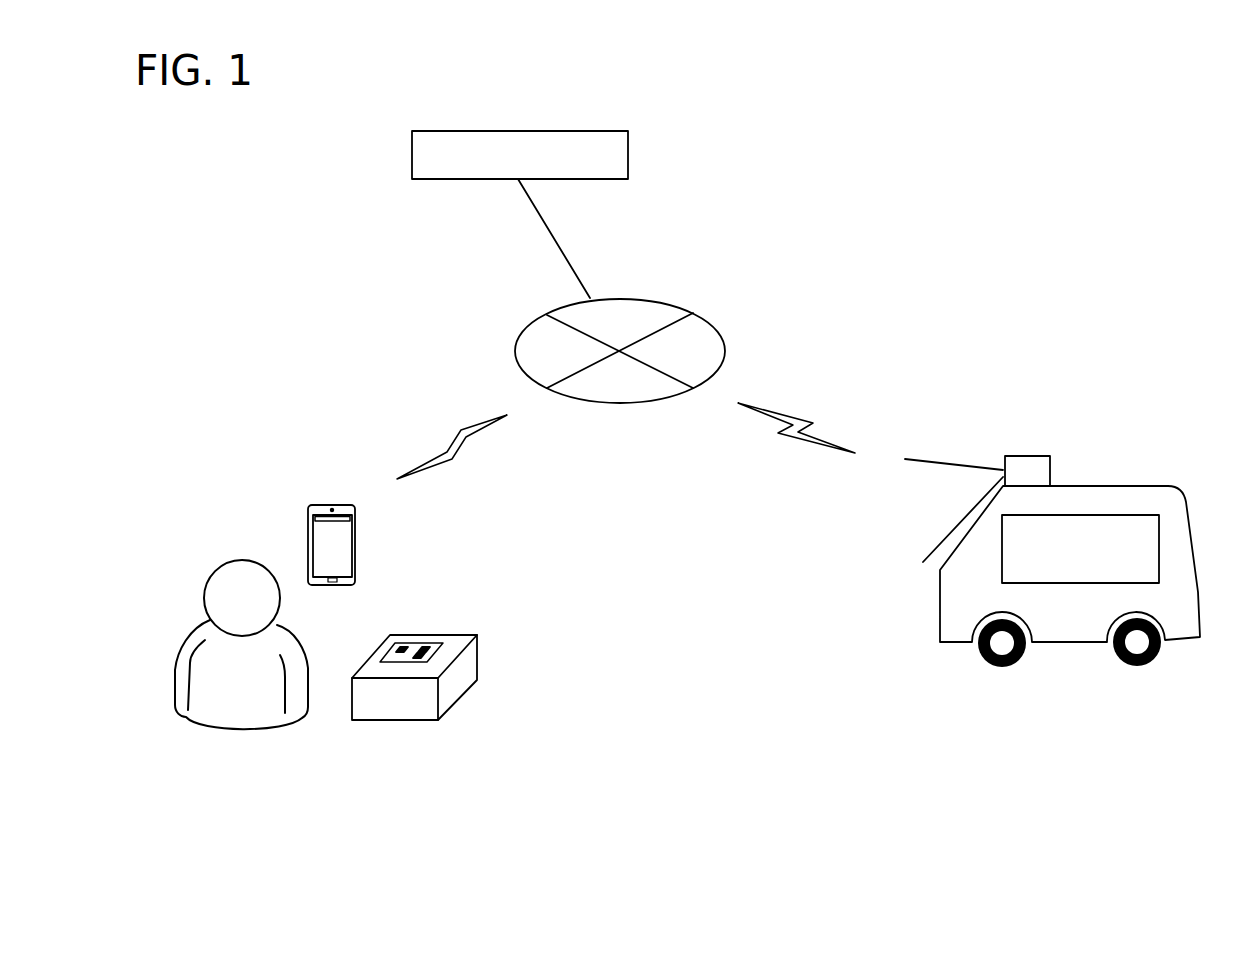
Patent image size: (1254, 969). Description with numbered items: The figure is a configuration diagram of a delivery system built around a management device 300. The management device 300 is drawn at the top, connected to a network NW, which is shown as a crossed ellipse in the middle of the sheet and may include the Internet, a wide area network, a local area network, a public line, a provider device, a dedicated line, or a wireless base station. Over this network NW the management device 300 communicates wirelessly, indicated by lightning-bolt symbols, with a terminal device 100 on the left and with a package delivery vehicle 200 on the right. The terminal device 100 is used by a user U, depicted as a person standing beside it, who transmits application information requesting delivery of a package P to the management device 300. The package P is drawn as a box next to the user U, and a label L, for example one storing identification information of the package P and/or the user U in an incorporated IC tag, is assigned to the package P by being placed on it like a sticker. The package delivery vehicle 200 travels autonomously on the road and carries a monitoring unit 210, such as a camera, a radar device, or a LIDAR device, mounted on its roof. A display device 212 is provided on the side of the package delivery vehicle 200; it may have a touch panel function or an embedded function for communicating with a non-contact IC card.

The management device 300 is at (548, 131).
The network NW is at (658, 298).
The terminal device 100 is at (332, 504).
The user U is at (241, 560).
The label L is at (416, 642).
The package P is at (401, 721).
The package delivery vehicle 200 is at (1026, 546).
The monitoring unit 210 is at (1025, 455).
The display device 212 is at (1078, 584).